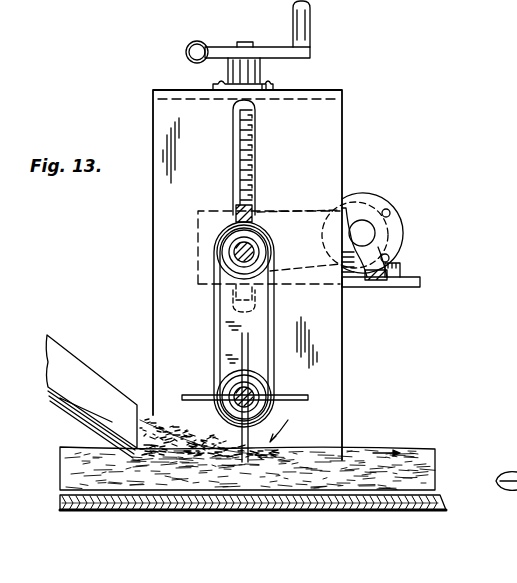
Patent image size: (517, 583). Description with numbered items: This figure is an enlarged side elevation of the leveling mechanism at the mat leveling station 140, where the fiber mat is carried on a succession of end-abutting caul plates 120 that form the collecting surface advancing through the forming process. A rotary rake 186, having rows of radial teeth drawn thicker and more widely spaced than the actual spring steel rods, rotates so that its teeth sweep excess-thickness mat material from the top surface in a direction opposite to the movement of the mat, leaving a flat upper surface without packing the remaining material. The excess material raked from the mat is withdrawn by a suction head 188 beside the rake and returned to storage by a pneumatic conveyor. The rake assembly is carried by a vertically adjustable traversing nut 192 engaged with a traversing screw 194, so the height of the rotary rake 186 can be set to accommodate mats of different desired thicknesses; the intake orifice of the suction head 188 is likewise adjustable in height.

The traversing screw 194 is at (255, 152).
The traversing nut 192 is at (252, 211).
The rotary rake 186 is at (293, 397).
The suction head 188 is at (62, 355).
The caul plate 120 is at (440, 500).
The mat leveling station 140 is at (272, 490).